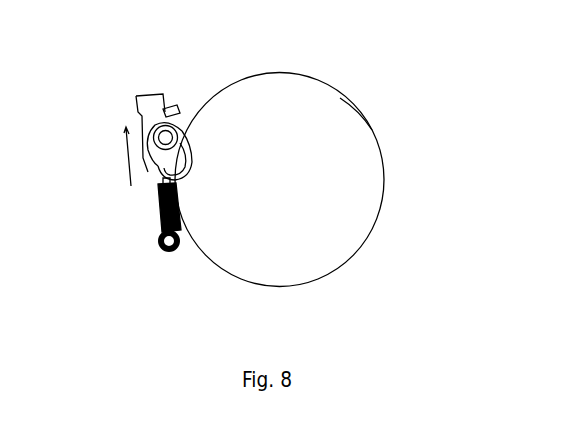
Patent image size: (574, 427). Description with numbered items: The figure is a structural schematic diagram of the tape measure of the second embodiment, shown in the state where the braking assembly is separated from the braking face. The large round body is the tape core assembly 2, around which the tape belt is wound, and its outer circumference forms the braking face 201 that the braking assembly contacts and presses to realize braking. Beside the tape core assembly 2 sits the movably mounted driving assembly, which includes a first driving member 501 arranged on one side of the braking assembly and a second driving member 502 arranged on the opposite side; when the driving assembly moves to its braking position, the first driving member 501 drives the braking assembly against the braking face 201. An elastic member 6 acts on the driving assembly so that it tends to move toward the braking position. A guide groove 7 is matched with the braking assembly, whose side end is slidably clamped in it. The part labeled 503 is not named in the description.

The tape core assembly 2 is at (345, 222).
The braking face 201 is at (362, 115).
The guide groove 7 is at (182, 145).
The first driving member 501 is at (165, 117).
The second driving member 502 is at (158, 162).
The bracket 503 is at (145, 103).
The elastic member 6 is at (160, 232).